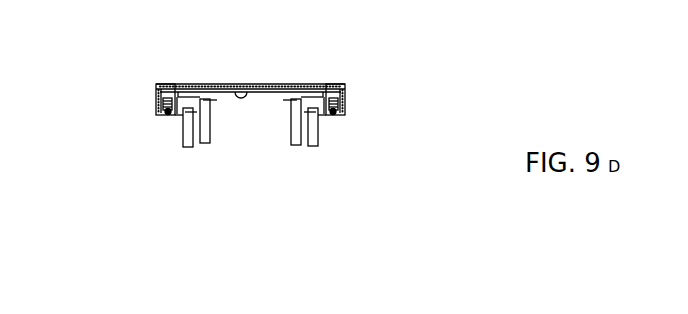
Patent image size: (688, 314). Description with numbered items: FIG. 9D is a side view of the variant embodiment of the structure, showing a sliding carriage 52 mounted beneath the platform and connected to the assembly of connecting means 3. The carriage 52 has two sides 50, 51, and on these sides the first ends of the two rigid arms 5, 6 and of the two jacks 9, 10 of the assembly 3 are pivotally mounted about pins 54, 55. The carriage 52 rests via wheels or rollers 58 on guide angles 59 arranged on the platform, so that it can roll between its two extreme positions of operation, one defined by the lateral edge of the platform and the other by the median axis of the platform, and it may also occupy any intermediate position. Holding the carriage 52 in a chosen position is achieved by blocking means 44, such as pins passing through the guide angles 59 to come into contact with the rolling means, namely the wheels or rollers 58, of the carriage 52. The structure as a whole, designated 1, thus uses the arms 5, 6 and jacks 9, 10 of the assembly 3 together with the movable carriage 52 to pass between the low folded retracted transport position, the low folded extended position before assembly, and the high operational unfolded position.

The base strip 1 is at (267, 85).
The assembly of connecting means 3 is at (259, 204).
The rigid arm 5 is at (317, 147).
The rigid arm 6 is at (187, 148).
The jack 9 is at (297, 146).
The jack 10 is at (208, 144).
The blocking means 44 is at (171, 117).
The side of carriage 50 is at (187, 96).
The side of carriage 51 is at (313, 92).
The carriage 52 is at (238, 86).
The pin 54 is at (174, 118).
The pin 55 is at (213, 102).
The wheels or rollers 58 is at (158, 88).
The guide angles 59 is at (164, 114).